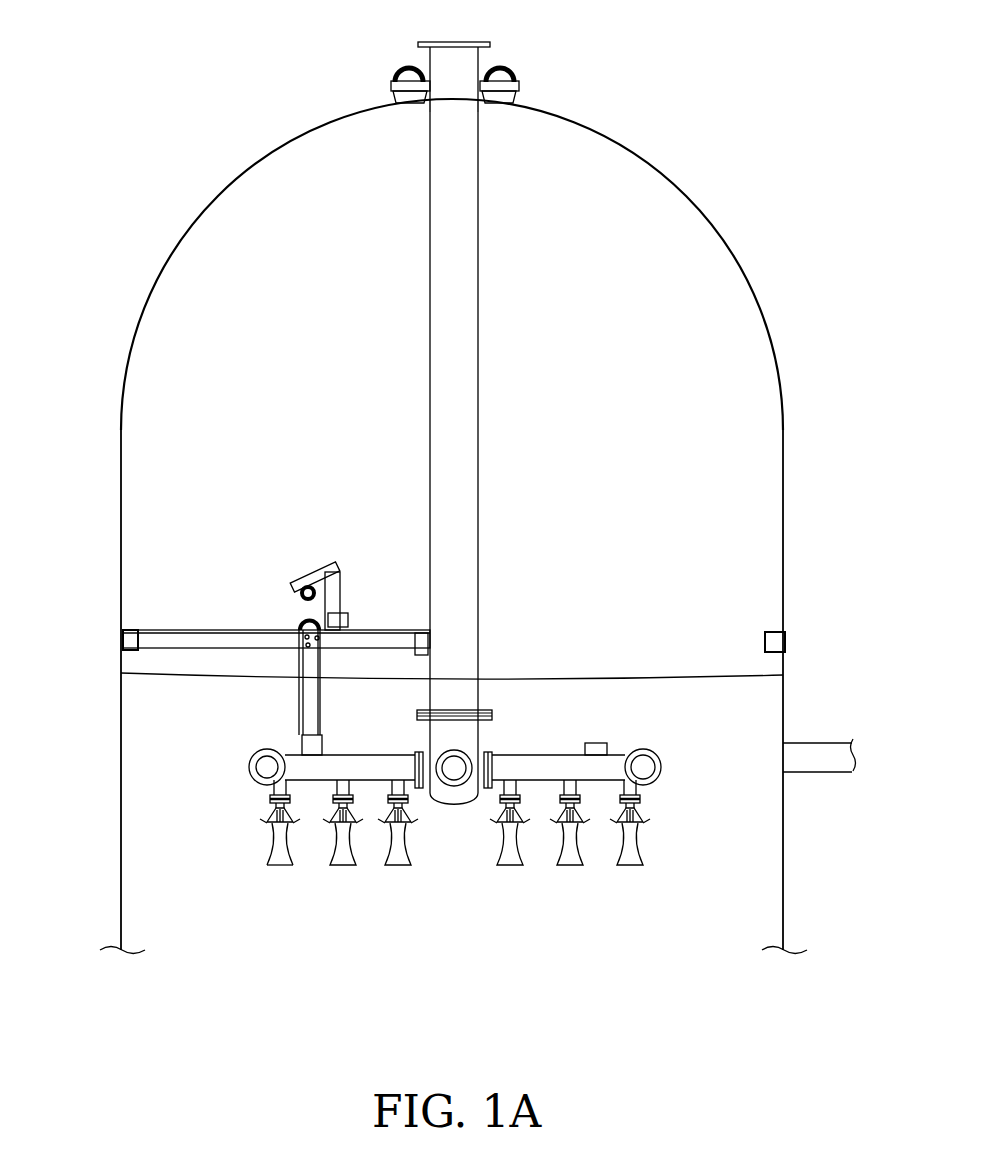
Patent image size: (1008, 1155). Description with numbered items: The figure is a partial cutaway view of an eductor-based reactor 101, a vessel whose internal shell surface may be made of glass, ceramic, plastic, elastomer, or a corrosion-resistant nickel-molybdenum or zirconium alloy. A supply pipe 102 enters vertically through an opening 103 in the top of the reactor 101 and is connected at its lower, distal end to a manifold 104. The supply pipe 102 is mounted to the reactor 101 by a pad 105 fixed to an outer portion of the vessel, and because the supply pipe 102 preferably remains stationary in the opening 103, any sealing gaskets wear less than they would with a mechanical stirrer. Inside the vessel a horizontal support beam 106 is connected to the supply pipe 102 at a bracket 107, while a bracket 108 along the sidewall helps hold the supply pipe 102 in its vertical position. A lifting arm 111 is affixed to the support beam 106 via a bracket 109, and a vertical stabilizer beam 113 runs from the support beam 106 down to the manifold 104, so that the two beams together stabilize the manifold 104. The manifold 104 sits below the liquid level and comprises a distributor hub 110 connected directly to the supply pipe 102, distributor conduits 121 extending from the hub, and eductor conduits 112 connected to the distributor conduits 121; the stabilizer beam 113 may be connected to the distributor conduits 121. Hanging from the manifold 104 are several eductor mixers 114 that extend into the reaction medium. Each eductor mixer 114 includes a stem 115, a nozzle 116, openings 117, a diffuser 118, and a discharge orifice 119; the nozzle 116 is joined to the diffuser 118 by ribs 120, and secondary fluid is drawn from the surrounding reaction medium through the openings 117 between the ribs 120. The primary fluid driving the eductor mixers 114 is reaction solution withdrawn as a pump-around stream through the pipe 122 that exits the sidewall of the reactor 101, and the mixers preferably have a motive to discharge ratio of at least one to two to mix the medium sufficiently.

The eductor-based reactor 101 is at (690, 160).
The supply pipe 102 is at (462, 368).
The opening 103 is at (458, 106).
The manifold 104 is at (515, 752).
The pad 105 is at (517, 83).
The support beam 106 is at (190, 628).
The bracket 107 is at (420, 657).
The bracket 108 is at (130, 653).
The bracket 109 is at (348, 620).
The distributor hub 110 is at (454, 806).
The lifting arm 111 is at (337, 570).
The eductor conduit 112 is at (262, 752).
The stabilizer beam 113 is at (310, 712).
The eductor mixer 114 is at (280, 876).
The stem 115 is at (279, 788).
The nozzle 116 is at (285, 802).
The openings 117 is at (268, 815).
The diffuser 118 is at (288, 858).
The discharge orifice 119 is at (287, 867).
The ribs 120 is at (298, 823).
The distributor conduit 121 is at (555, 760).
The pipe 122 is at (822, 752).